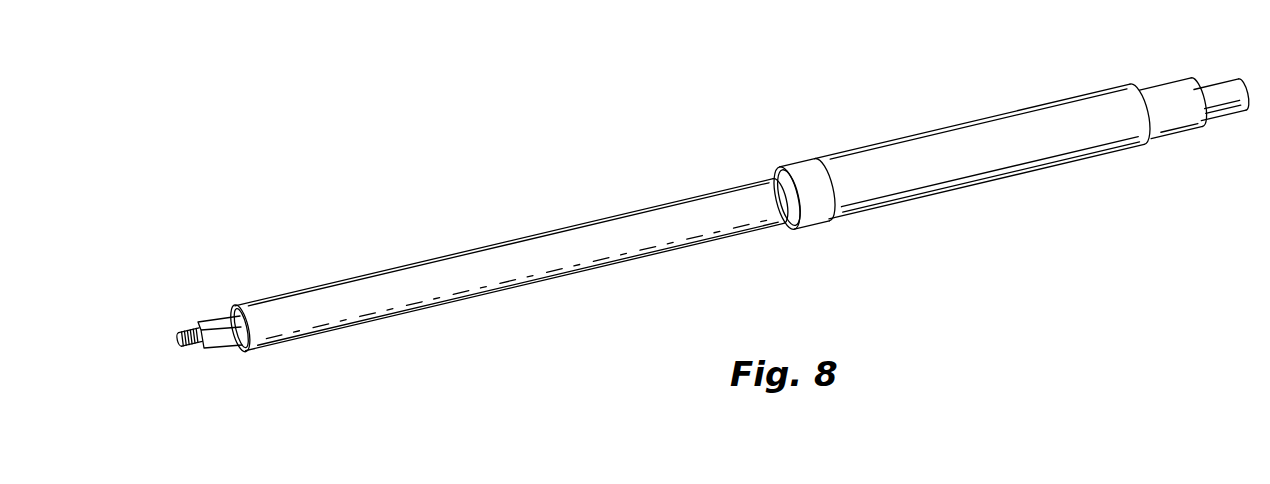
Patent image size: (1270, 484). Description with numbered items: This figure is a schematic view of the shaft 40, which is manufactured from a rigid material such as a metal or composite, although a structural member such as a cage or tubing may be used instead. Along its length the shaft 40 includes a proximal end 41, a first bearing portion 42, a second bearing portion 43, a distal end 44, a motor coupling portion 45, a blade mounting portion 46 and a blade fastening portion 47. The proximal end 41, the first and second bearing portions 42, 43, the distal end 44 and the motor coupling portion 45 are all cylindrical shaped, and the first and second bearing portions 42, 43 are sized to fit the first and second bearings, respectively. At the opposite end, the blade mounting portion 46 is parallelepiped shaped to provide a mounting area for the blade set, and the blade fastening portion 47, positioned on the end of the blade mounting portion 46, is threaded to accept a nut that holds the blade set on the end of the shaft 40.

The shaft 40 is at (711, 223).
The proximal end 41 is at (503, 275).
The first bearing portion 42 is at (797, 222).
The second bearing portion 43 is at (1173, 122).
The distal end 44 is at (930, 170).
The motor coupling portion 45 is at (1220, 88).
The blade mounting portion 46 is at (211, 313).
The blade fastening portion 47 is at (178, 347).